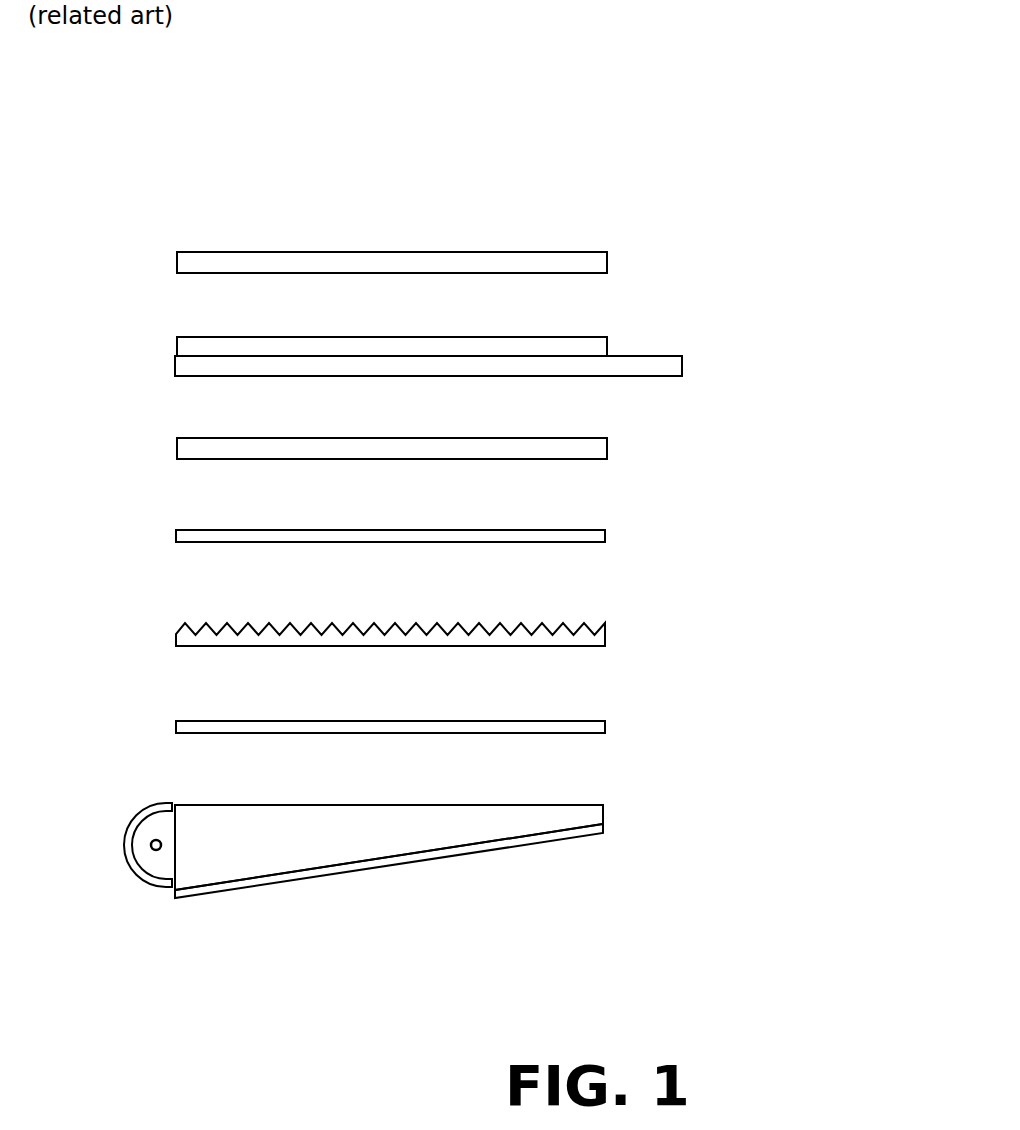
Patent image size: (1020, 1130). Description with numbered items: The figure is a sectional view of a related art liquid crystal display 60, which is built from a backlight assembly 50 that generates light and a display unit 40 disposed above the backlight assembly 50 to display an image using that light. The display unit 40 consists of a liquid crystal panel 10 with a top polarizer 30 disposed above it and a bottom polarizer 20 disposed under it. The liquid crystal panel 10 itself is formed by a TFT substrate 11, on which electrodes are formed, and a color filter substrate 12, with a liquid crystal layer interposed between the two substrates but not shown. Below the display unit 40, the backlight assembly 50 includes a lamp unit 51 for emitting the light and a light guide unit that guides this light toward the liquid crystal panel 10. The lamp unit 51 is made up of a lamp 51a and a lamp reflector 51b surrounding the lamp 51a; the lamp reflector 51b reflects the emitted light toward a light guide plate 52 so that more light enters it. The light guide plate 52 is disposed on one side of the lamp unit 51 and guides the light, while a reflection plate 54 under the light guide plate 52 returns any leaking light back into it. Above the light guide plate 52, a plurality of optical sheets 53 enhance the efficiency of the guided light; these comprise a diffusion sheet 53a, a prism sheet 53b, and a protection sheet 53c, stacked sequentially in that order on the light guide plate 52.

The liquid crystal display device 60 is at (583, 191).
The display unit 40 is at (853, 248).
The top polarizer 30 is at (607, 262).
The liquid crystal panel 10 is at (765, 300).
The color filter substrate 12 is at (607, 347).
The TFT substrate 11 is at (682, 366).
The bottom polarizer 20 is at (607, 447).
The backlight assembly 50 is at (853, 517).
The optical sheets 53 is at (727, 530).
The protection sheet 53c is at (605, 535).
The prism sheet 53b is at (605, 632).
The diffusion sheet 53a is at (605, 727).
The light guide plate 52 is at (603, 808).
The reflection plate 54 is at (603, 828).
The lamp unit 51 is at (120, 949).
The lamp 51a is at (150, 845).
The lamp reflector 51b is at (140, 884).